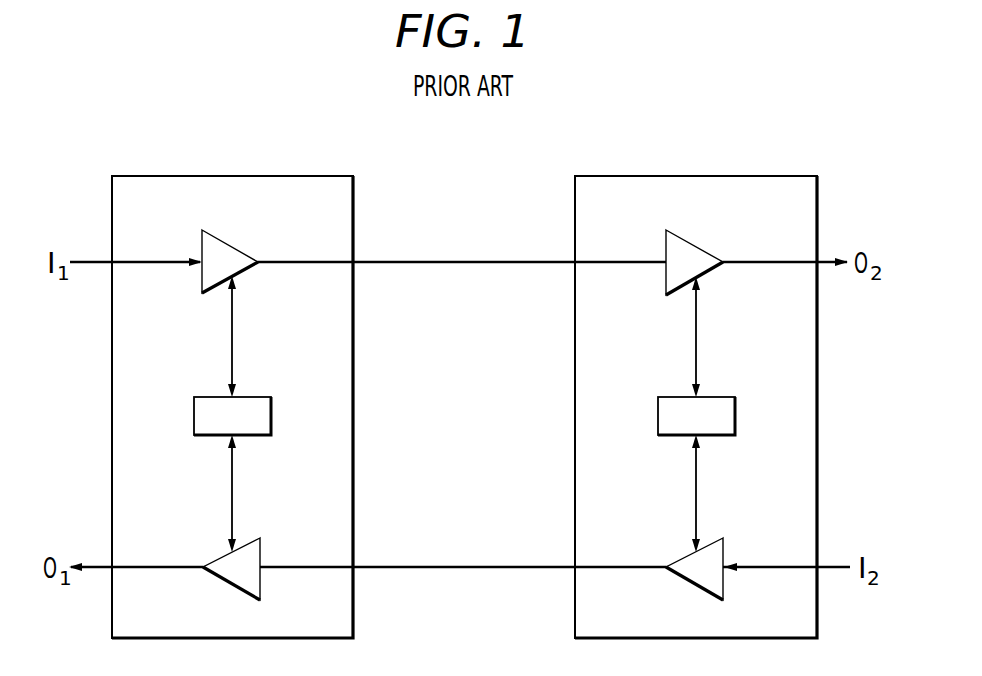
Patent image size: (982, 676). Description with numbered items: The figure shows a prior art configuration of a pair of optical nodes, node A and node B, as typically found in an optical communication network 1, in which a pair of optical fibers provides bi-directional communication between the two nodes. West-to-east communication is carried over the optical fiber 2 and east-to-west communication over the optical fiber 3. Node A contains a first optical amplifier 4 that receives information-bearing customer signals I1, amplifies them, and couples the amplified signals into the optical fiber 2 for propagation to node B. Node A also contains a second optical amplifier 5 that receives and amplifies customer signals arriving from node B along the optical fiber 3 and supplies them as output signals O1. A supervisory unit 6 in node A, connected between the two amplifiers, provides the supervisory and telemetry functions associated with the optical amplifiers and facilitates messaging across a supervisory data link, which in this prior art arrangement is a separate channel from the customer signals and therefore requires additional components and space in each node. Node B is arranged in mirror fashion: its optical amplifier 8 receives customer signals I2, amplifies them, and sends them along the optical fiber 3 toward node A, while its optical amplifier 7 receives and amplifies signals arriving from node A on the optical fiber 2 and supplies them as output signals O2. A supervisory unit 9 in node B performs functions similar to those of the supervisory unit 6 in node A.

The optical communication network 1 is at (752, 132).
The optical fiber 2 is at (452, 262).
The optical fiber 3 is at (452, 567).
The first optical amplifier 4 is at (230, 245).
The second optical amplifier 5 is at (262, 553).
The supervisory unit 6 is at (250, 397).
The optical amplifier 7 is at (693, 245).
The optical amplifier 8 is at (723, 553).
The supervisory unit 9 is at (713, 397).